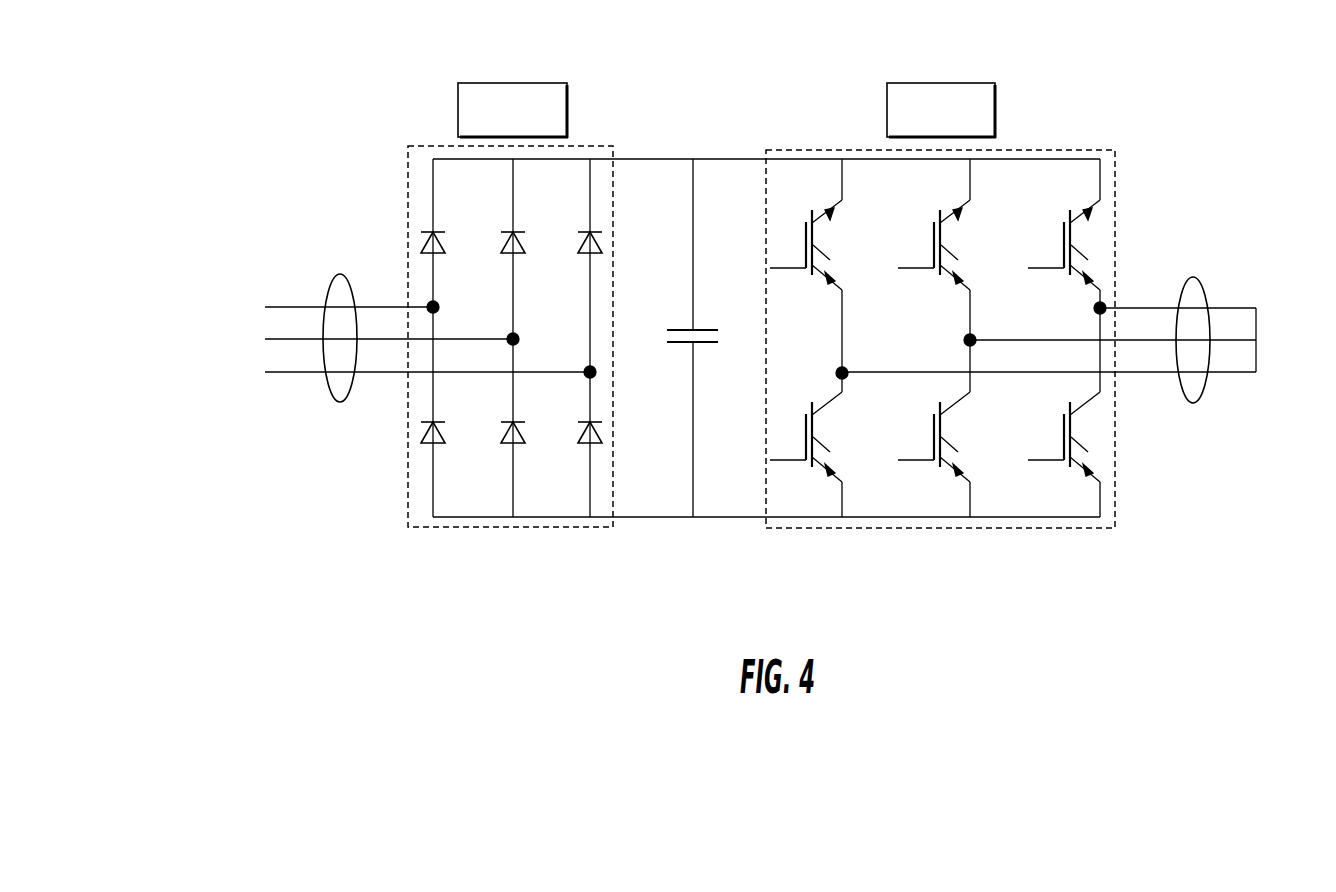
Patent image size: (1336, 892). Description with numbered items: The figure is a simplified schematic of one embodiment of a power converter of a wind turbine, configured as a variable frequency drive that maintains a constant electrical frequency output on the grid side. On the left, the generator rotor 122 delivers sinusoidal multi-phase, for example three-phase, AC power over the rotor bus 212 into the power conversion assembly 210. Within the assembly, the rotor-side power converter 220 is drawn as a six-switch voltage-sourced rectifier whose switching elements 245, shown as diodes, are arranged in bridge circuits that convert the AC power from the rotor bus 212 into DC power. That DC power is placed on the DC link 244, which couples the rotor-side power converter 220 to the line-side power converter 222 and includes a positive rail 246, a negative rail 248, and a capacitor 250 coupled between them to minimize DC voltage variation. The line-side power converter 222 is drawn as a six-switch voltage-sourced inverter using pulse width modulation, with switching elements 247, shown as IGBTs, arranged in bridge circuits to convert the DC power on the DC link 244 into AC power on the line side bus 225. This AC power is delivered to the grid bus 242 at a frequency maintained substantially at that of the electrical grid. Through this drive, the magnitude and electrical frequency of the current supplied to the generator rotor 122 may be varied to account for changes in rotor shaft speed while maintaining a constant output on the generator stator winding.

The generator rotor 122 is at (212, 392).
The rotor bus 212 is at (340, 402).
The power conversion assembly 210 is at (1195, 132).
The rotor-side power converter 220 is at (530, 331).
The switching elements 245 is at (523, 443).
The positive rail 246 is at (645, 157).
The negative rail 248 is at (722, 517).
The DC link 244 is at (725, 208).
The capacitor 250 is at (714, 368).
The line-side power converter 222 is at (940, 351).
The switching elements 247 is at (938, 466).
The line side bus 225 is at (1193, 277).
The grid bus 242 is at (1322, 383).